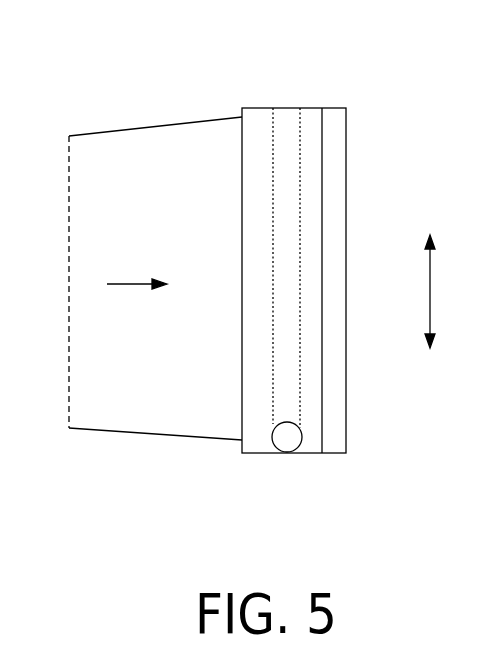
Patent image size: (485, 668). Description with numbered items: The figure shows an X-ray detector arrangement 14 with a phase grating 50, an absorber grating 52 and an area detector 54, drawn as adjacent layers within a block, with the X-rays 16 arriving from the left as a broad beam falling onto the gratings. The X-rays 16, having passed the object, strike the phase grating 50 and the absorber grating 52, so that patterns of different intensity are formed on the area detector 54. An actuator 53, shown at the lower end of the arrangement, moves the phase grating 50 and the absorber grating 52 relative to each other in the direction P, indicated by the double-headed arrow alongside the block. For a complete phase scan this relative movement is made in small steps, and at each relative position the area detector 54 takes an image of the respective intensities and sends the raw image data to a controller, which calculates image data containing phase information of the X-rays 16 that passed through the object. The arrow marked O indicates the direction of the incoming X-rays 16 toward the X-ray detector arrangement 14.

The X-ray detector arrangement 14 is at (346, 400).
The X-rays 16 is at (113, 293).
The phase grating 50 is at (273, 107).
The absorber grating 52 is at (293, 107).
The actuator 53 is at (292, 453).
The area detector 54 is at (323, 150).
The direction O is at (128, 284).
The direction P is at (439, 291).